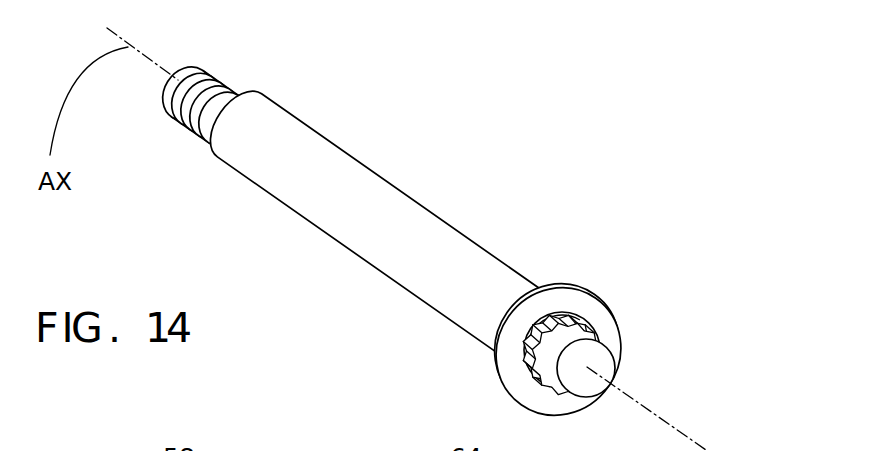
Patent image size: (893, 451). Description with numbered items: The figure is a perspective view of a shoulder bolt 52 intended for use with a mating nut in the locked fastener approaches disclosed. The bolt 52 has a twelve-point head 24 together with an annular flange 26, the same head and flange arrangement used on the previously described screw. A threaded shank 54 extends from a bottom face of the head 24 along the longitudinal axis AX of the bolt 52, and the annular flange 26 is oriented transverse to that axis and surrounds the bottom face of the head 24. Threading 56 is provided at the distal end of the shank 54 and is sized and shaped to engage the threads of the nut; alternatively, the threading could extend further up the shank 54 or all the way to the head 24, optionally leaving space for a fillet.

The shoulder bolt 52 is at (462, 233).
The threaded shank 54 is at (370, 237).
The threading 56 is at (222, 78).
The annular flange 26 is at (578, 302).
The twelve-point head 24 is at (598, 362).